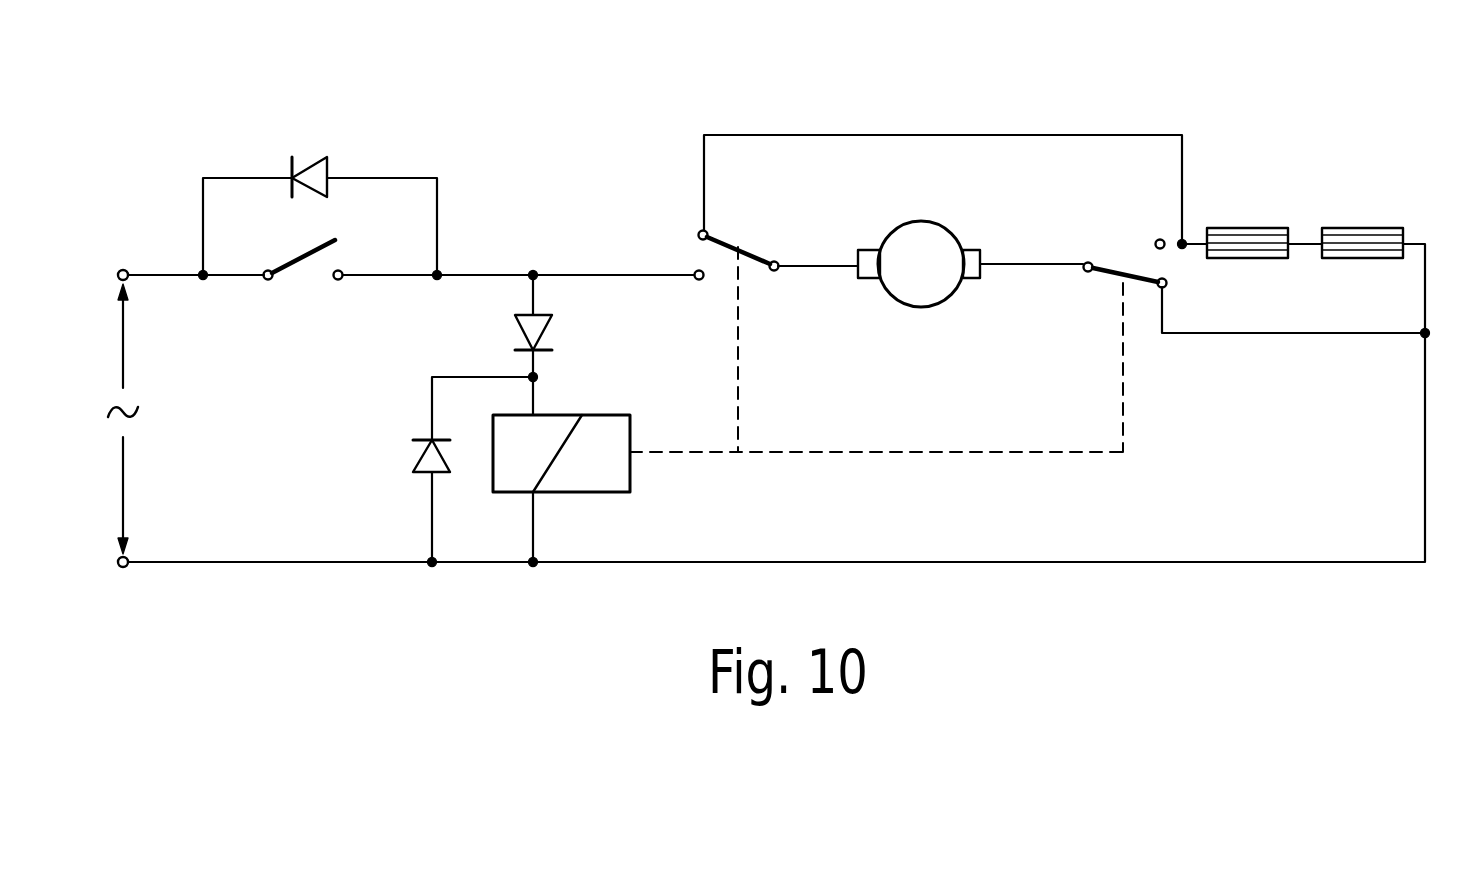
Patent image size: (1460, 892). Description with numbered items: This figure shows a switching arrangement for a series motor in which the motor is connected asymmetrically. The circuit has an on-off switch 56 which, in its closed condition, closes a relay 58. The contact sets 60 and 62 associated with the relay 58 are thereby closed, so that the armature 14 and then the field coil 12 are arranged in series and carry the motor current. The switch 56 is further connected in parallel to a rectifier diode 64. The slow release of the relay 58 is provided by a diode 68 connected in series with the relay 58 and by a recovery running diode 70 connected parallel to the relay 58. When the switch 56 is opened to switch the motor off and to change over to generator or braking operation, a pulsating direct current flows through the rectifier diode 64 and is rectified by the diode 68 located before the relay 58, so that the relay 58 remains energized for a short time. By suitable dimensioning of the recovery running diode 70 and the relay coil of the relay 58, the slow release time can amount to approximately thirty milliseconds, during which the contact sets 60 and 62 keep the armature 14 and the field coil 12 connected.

The field coil 12 is at (1257, 228).
The armature 14 is at (925, 308).
The on-off switch 56 is at (300, 262).
The relay 58 is at (593, 412).
The contact set 60 is at (745, 250).
The contact set 62 is at (1108, 277).
The rectifier diode 64 is at (310, 157).
The diode 68 is at (518, 326).
The recovery running diode 70 is at (413, 455).